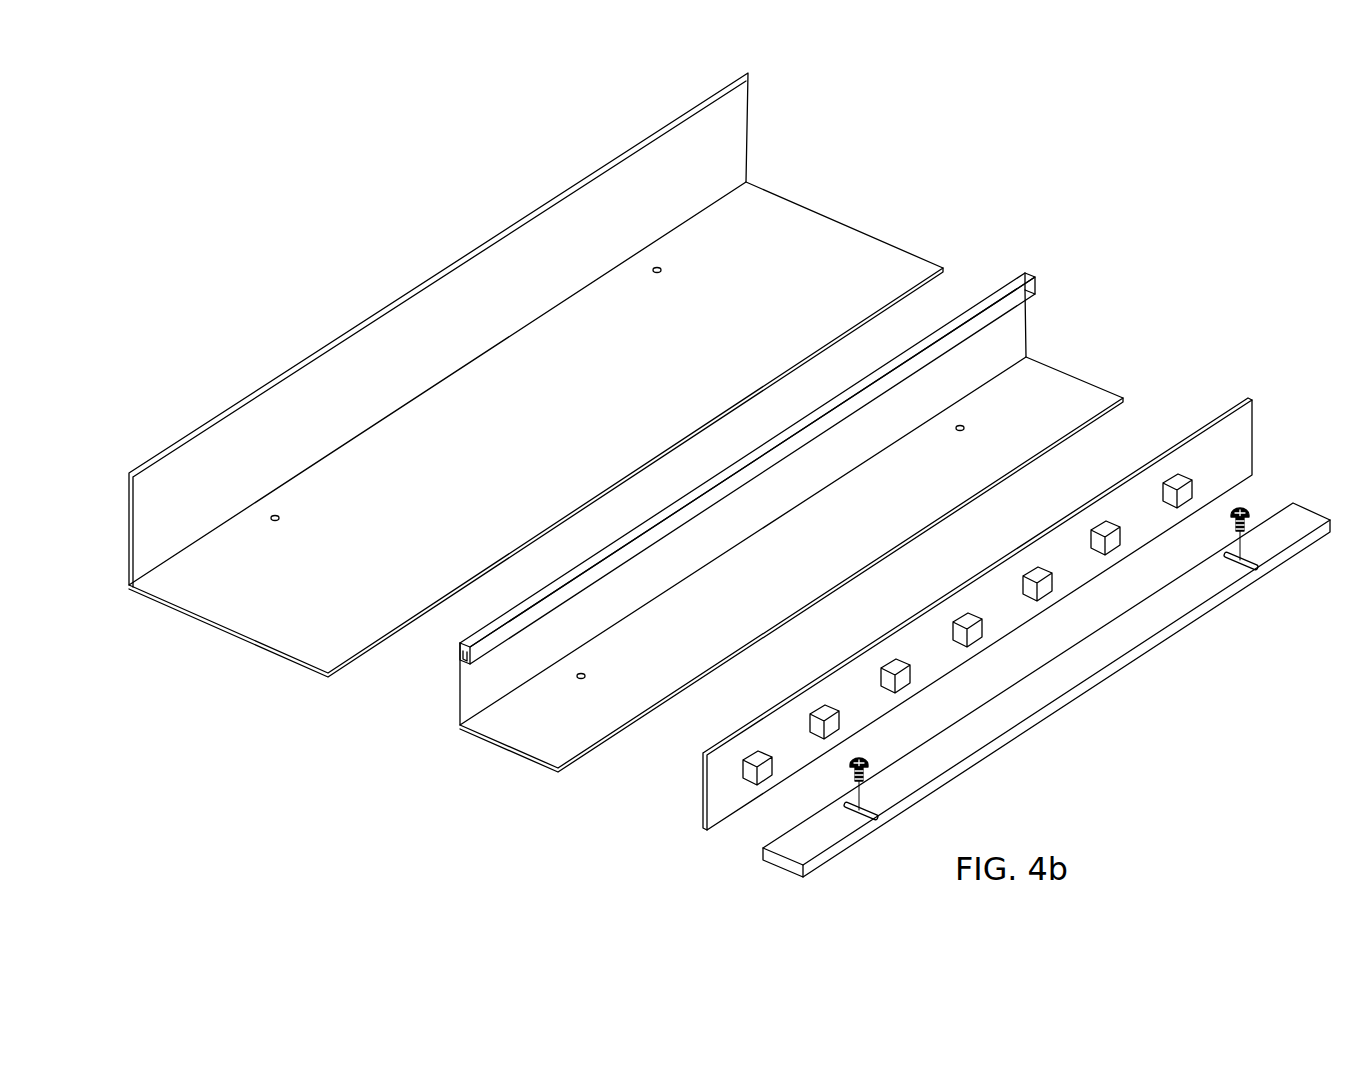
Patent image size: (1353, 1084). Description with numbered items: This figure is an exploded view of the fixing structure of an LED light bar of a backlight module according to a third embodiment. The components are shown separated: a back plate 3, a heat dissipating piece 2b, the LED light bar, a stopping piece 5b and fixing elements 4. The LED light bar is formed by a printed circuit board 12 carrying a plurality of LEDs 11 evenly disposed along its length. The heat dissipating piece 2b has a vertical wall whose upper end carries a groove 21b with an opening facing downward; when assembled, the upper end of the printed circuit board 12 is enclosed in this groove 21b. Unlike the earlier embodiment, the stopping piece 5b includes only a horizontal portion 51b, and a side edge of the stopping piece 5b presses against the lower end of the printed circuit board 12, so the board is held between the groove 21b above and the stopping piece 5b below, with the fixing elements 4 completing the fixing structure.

The back plate 3 is at (129, 483).
The heat dissipating piece 2b is at (731, 522).
The groove 21b is at (456, 660).
The printed circuit board 12 is at (929, 607).
The LEDs 11 is at (1176, 474).
The stopping piece 5b is at (996, 710).
The horizontal portion 51b is at (856, 813).
The fixing elements 4 is at (1245, 507).